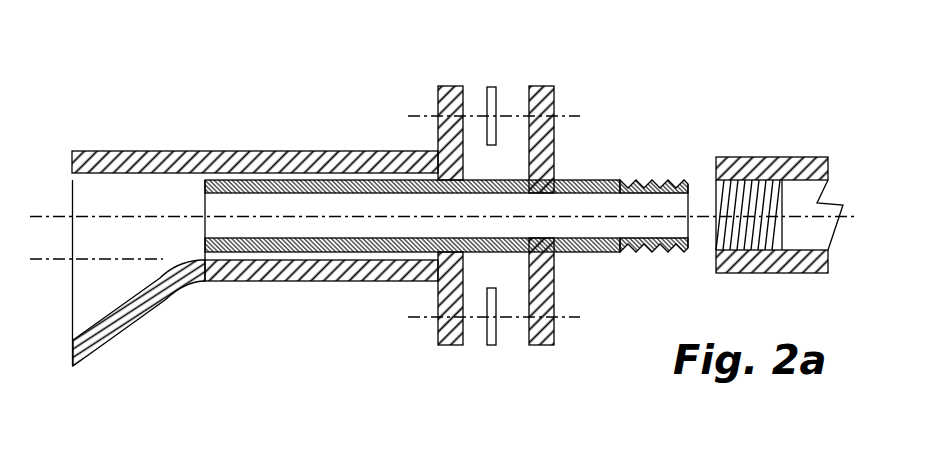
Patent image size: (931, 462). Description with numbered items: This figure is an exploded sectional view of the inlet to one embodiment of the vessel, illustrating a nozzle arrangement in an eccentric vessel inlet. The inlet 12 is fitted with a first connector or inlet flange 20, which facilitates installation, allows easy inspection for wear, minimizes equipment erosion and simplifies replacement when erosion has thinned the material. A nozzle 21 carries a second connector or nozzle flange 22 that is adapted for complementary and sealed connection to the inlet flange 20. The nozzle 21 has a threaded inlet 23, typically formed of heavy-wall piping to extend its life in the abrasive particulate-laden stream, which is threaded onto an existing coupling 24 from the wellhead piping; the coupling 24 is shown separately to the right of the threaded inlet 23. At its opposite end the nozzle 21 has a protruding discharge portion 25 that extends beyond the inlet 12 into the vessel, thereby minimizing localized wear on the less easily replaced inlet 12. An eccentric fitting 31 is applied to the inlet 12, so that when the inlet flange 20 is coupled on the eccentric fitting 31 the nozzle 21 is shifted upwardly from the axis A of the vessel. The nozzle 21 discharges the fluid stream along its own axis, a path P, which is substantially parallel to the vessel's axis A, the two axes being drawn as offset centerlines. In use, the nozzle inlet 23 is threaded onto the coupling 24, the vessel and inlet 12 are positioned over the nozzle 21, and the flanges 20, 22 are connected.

The inlet 12 is at (290, 92).
The inlet flange 20 is at (453, 86).
The nozzle 21 is at (317, 253).
The nozzle flange 22 is at (545, 86).
The threaded inlet 23 is at (630, 180).
The coupling 24 is at (740, 157).
The discharge portion 25 is at (200, 283).
The eccentric fitting 31 is at (132, 330).
The path P is at (49, 217).
The axis A is at (50, 260).